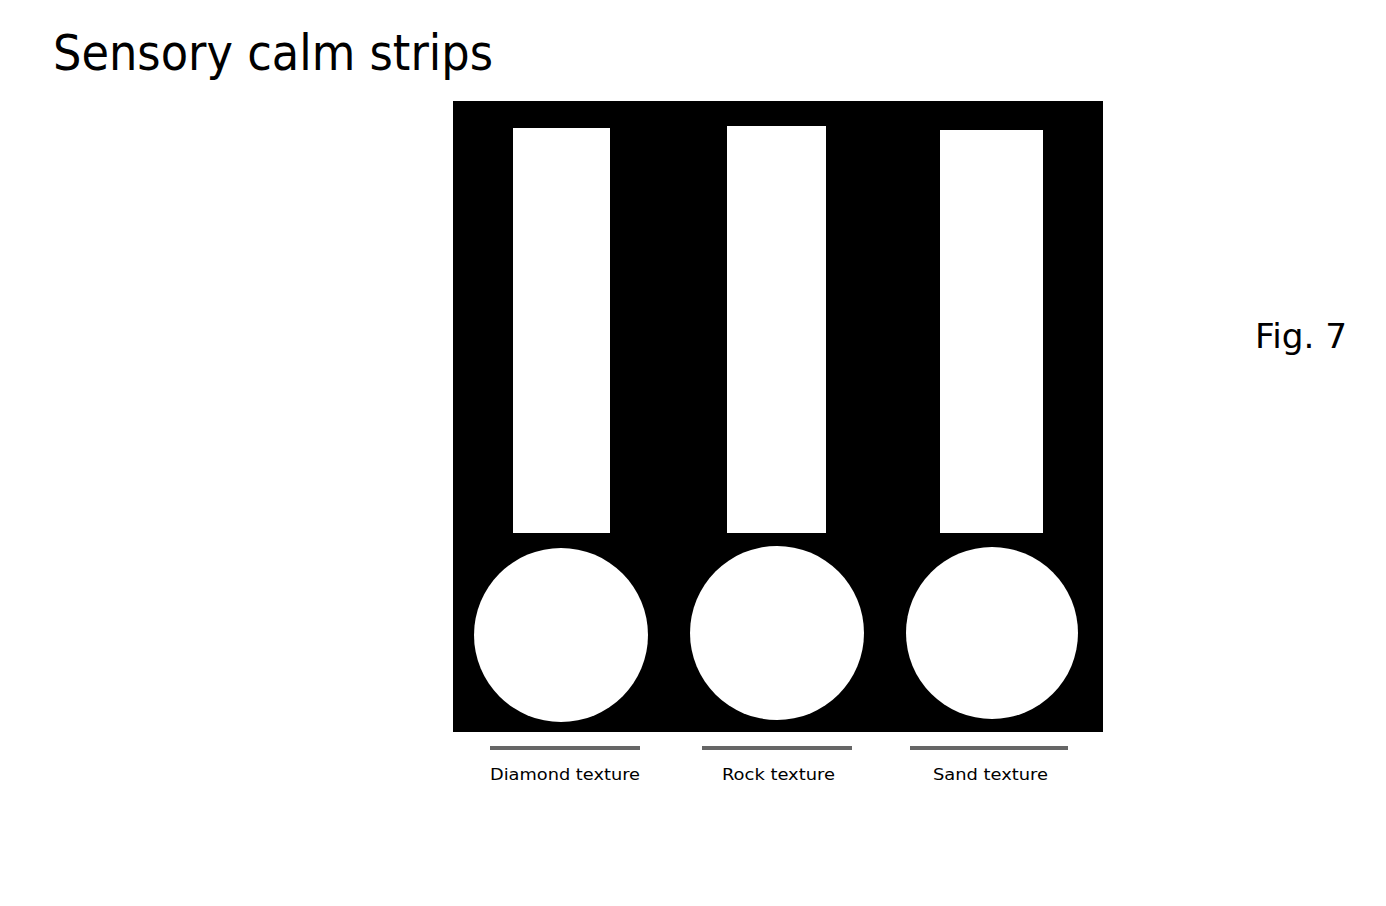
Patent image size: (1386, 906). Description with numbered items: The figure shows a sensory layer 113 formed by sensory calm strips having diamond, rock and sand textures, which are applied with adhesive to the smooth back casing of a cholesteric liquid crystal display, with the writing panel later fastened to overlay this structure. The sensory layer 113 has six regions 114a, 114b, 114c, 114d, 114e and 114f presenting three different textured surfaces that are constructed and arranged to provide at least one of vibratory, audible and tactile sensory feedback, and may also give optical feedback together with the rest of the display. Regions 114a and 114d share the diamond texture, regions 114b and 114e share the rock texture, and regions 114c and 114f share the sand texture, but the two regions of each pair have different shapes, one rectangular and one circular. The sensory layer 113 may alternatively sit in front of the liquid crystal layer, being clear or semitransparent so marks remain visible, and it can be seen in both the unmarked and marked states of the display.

The sensory layer 113 is at (1122, 246).
The region 114a is at (562, 307).
The region 114b is at (768, 365).
The region 114c is at (978, 415).
The region 114d is at (562, 630).
The region 114e is at (777, 635).
The region 114f is at (995, 663).